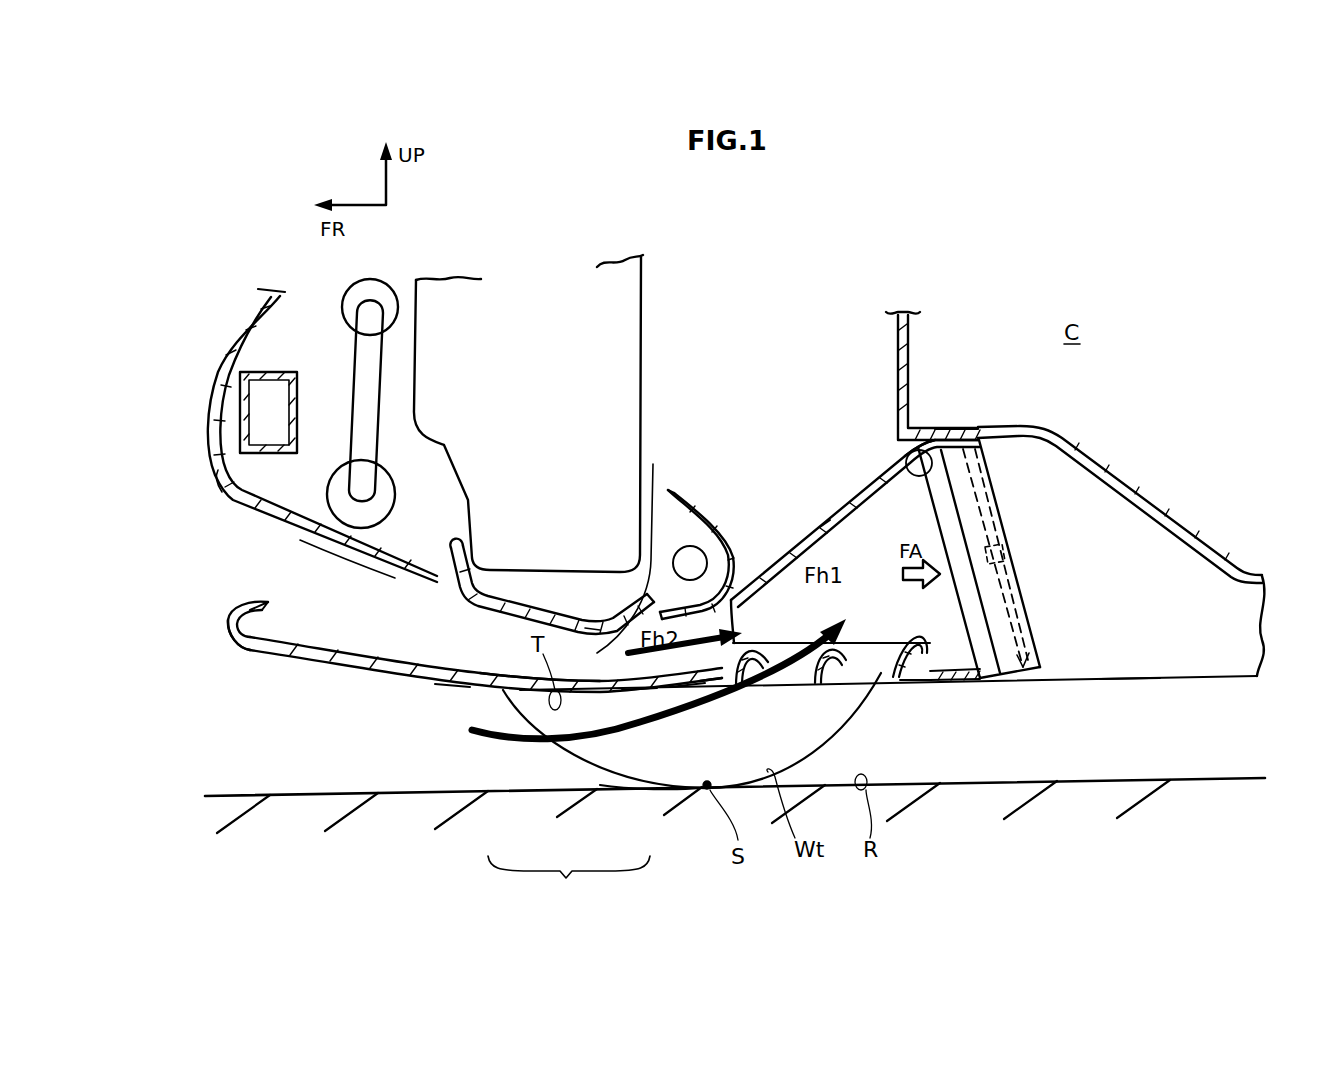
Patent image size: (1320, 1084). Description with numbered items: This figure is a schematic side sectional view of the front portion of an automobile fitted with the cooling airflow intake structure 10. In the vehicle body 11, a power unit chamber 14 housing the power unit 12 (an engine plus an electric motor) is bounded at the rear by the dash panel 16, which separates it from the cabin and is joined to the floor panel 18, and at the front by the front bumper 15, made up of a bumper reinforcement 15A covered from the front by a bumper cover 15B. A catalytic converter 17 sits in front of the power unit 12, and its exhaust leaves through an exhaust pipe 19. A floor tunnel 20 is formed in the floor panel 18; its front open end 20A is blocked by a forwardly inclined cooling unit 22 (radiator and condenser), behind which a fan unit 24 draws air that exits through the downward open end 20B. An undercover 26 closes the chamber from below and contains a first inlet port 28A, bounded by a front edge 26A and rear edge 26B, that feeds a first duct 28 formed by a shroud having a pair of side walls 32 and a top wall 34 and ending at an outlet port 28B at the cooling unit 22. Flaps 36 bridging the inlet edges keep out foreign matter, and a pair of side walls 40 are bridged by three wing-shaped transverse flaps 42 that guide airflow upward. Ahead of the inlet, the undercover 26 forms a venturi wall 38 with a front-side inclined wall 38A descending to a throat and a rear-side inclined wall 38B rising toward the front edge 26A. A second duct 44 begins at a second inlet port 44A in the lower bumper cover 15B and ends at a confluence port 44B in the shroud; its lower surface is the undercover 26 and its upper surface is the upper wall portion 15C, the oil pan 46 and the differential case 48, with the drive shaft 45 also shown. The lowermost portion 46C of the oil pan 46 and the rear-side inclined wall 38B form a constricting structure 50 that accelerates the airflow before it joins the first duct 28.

The cooling airflow intake structure 10 is at (832, 260).
The vehicle body 11 is at (232, 326).
The power unit 12 is at (628, 333).
The power unit chamber 14 is at (731, 391).
The front bumper 15 is at (193, 575).
The bumper reinforcement 15A is at (222, 490).
The bumper cover 15B is at (213, 427).
The upper wall portion 15C is at (314, 543).
The dash panel 16 is at (905, 352).
The catalytic converter 17 is at (384, 503).
The floor panel 18 is at (1131, 461).
The exhaust pipe 19 is at (372, 440).
The floor tunnel 20 is at (1150, 503).
The open end 20A is at (958, 447).
The open end 20B is at (1133, 678).
The cooling unit 22 is at (990, 668).
The fan unit 24 is at (1030, 662).
The undercover 26 is at (415, 690).
The front edge 26A is at (686, 677).
The rear edge 26B is at (918, 682).
The first duct 28 is at (879, 586).
The first inlet port 28A is at (782, 690).
The outlet port 28B is at (902, 456).
The side walls 32 is at (850, 537).
The top wall 34 is at (870, 488).
The flaps 36 is at (876, 676).
The venturi wall 38 is at (569, 879).
The front-side inclined wall 38A is at (450, 690).
The rear-side inclined wall 38B is at (640, 690).
The side walls 40 is at (779, 764).
The transverse flaps 42 is at (772, 643).
The second duct 44 is at (502, 651).
The second inlet port 44A is at (246, 603).
The confluence port 44B is at (732, 686).
The drive shaft 45 is at (694, 563).
The oil pan 46 is at (540, 597).
The lowermost portion 46C is at (590, 610).
The differential case 48 is at (710, 537).
The constricting structure 50 is at (636, 546).